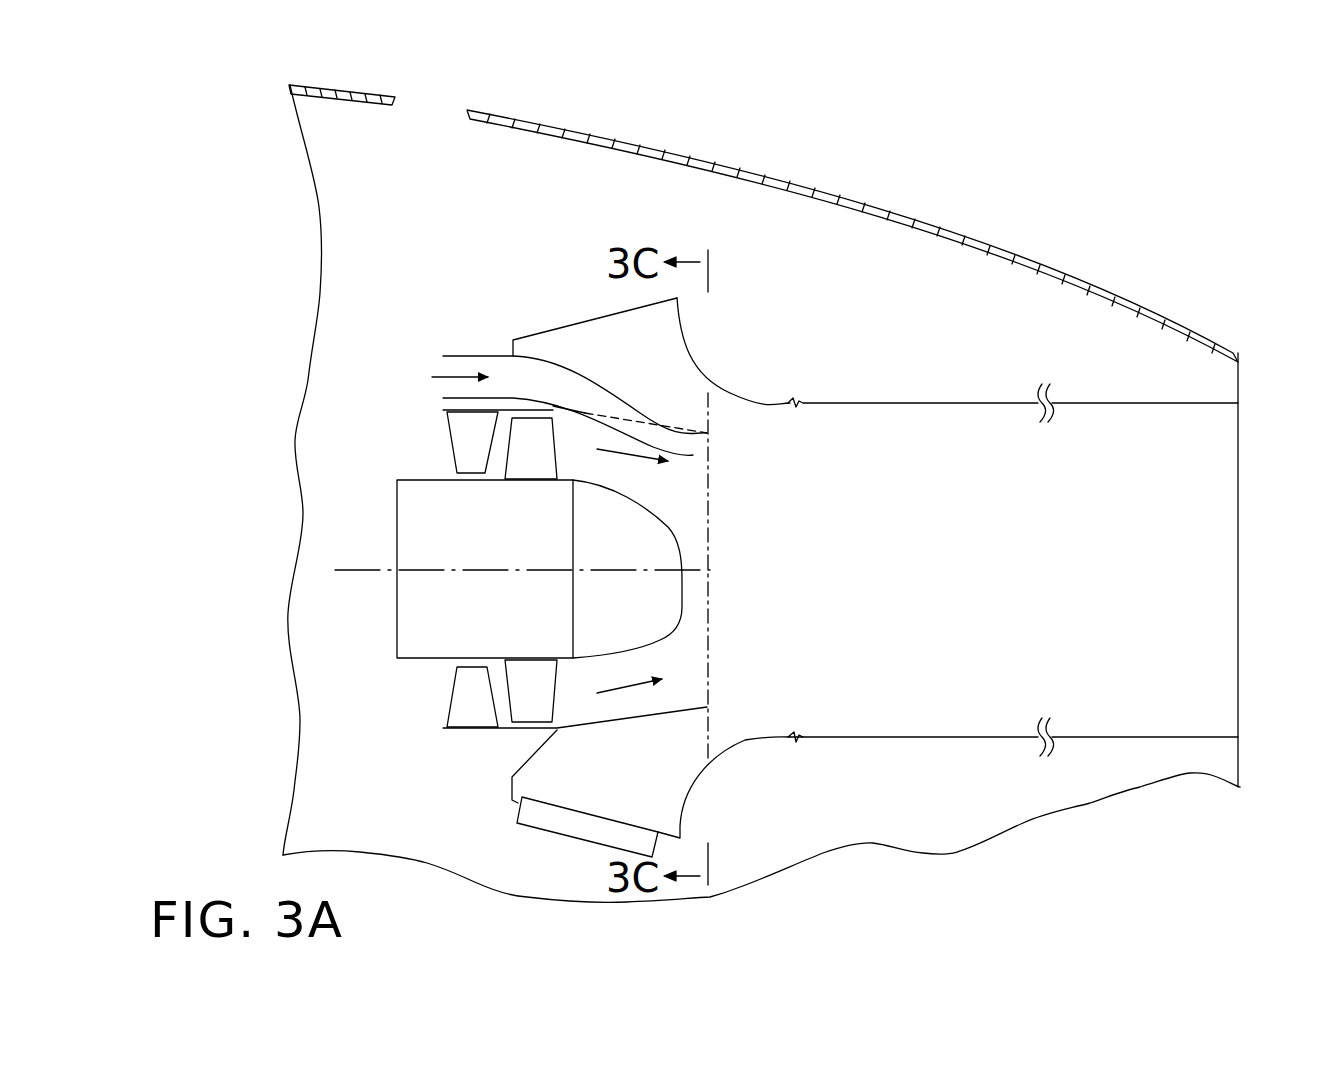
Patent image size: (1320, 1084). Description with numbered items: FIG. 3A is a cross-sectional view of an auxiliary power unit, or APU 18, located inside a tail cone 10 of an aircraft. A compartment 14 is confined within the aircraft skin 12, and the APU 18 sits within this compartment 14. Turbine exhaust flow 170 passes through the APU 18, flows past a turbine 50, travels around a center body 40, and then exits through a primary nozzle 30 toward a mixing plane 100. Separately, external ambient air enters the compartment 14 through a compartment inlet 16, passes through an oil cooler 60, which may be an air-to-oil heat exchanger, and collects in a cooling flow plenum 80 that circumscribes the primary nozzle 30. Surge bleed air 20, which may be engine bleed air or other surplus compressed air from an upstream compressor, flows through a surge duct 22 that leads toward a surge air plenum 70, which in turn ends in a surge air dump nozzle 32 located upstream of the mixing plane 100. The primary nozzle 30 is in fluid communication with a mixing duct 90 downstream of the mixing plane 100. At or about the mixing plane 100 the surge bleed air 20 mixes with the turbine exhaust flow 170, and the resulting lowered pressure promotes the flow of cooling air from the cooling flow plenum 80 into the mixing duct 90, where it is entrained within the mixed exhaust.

The tail cone 10 is at (1064, 179).
The aircraft skin 12 is at (712, 158).
The compartment 14 is at (540, 168).
The compartment inlet 16 is at (433, 108).
The APU 18 is at (403, 770).
The surge bleed air 20 is at (445, 372).
The surge duct 22 is at (486, 352).
The primary nozzle 30 is at (628, 723).
The surge air dump nozzle 32 is at (710, 444).
The center body 40 is at (600, 546).
The turbine 50 is at (528, 690).
The oil cooler 60 is at (535, 830).
The surge air plenum 70 is at (673, 427).
The cooling flow plenum 80 is at (586, 345).
The mixing duct 90 is at (1100, 738).
The mixing plane 100 is at (712, 510).
The turbine exhaust flow 170 is at (612, 450).